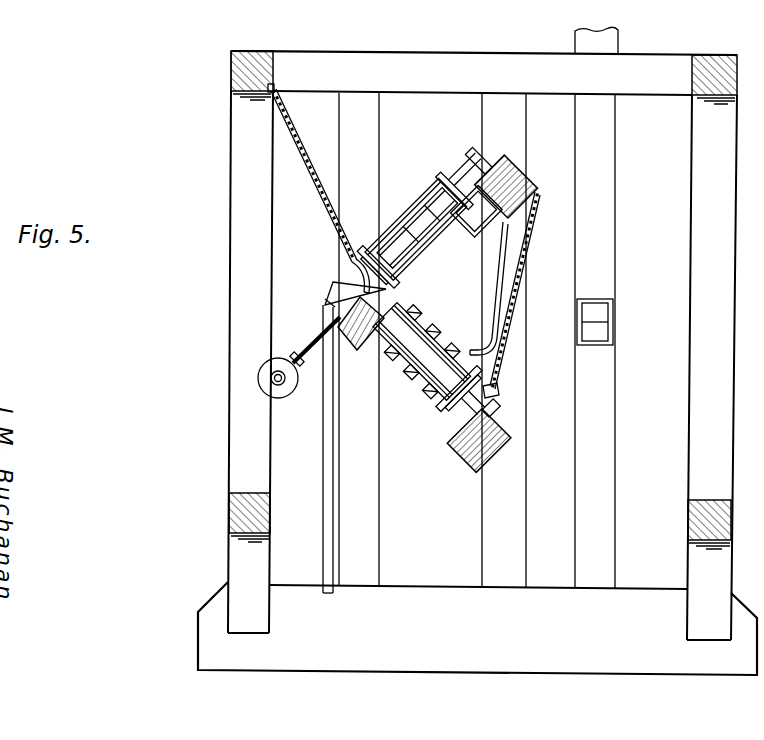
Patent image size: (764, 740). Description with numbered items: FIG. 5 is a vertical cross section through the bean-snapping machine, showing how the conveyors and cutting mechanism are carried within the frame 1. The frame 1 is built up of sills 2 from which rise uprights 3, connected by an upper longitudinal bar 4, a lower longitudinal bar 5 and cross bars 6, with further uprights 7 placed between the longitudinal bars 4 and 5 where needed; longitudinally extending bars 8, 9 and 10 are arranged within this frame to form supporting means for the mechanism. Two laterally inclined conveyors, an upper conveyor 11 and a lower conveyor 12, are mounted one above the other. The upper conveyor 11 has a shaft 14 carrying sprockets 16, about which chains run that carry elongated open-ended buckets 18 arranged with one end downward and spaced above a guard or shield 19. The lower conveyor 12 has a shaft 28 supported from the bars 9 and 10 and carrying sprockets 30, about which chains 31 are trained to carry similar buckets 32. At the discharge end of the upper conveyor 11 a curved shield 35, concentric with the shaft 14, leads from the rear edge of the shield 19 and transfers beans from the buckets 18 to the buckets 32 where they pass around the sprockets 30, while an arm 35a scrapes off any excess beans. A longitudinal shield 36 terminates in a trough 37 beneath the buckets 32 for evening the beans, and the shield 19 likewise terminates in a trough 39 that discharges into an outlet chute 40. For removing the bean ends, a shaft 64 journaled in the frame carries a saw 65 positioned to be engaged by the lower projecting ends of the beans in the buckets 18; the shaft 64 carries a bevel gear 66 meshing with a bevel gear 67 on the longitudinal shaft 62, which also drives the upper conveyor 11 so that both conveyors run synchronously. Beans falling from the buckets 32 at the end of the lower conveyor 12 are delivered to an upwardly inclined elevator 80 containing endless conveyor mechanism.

The frame 1 is at (347, 50).
The sills 2 is at (488, 663).
The uprights 3 is at (229, 566).
The upper longitudinal bar 4 is at (231, 70).
The lower longitudinal bar 5 is at (229, 512).
The cross bars 6 is at (468, 56).
The uprights 7 is at (236, 190).
The longitudinally extending bar 8 is at (529, 180).
The longitudinally extending bar 9 is at (362, 344).
The longitudinally extending bar 10 is at (472, 463).
The upper conveyor 11 is at (446, 176).
The lower conveyor 12 is at (428, 380).
The shaft 14 is at (464, 172).
The sprockets 16 is at (458, 222).
The buckets or pockets 18 is at (428, 198).
The guard or shield 19 is at (318, 195).
The shaft 28 is at (493, 407).
The sprockets 30 is at (458, 400).
The chains 31 is at (441, 405).
The buckets or pockets 32 is at (442, 340).
The curved shield or guard 35 is at (436, 188).
The arm 35a is at (478, 346).
The shield or guard 36 is at (514, 289).
The trough 37 is at (494, 390).
The trough 39 is at (360, 277).
The outlet chute or spout 40 is at (337, 293).
The shaft 62 is at (276, 378).
The shaft 64 is at (315, 341).
The saw 65 is at (351, 260).
The bevel gear 66 is at (288, 358).
The bevel gear 67 is at (289, 389).
The elevator 80 is at (603, 200).